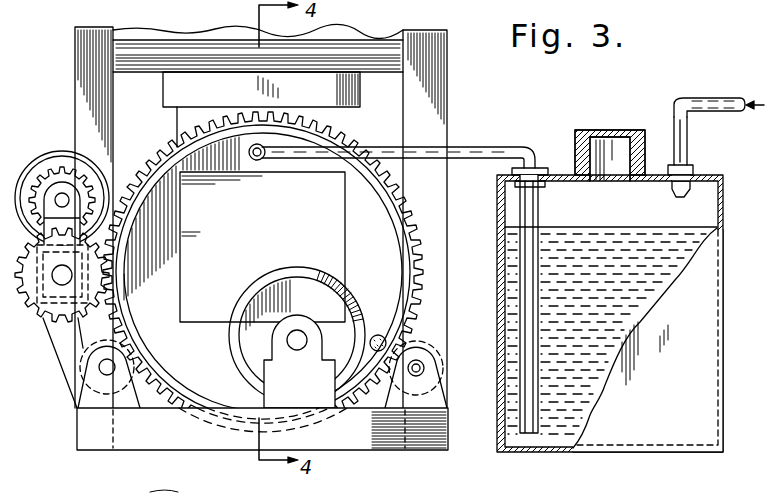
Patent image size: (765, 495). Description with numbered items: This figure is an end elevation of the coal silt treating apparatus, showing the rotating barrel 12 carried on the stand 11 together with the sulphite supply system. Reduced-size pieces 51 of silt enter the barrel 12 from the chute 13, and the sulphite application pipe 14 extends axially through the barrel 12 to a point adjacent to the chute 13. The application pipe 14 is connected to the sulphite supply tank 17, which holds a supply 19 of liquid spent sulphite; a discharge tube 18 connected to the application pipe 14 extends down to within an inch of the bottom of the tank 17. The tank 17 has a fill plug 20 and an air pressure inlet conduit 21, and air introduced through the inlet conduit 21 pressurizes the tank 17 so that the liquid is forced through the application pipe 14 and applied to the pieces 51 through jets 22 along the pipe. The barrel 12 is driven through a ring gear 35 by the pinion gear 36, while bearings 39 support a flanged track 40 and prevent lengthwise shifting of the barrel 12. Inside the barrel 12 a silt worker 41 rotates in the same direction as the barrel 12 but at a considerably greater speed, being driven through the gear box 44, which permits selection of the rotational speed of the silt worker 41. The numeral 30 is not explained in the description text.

The stand 11 is at (432, 92).
The rotating barrel 12 is at (173, 153).
The chute 13 is at (336, 124).
The sulphite application pipe 14 is at (465, 147).
The sulphite supply tank 17 is at (568, 452).
The discharge tube 18 is at (540, 201).
The supply of liquid spent sulphite 19 is at (605, 230).
The fill plug 20 is at (609, 131).
The air pressure inlet conduit 21 is at (688, 137).
The jets 22 is at (258, 160).
The base member 30 is at (178, 484).
The ring gear 35 is at (400, 188).
The pinion gear 36 is at (28, 300).
The bearings 39 is at (82, 368).
The flanged track 40 is at (408, 336).
The silt worker 41 is at (246, 357).
The gear box 44 is at (28, 164).
The pieces 51 is at (378, 336).